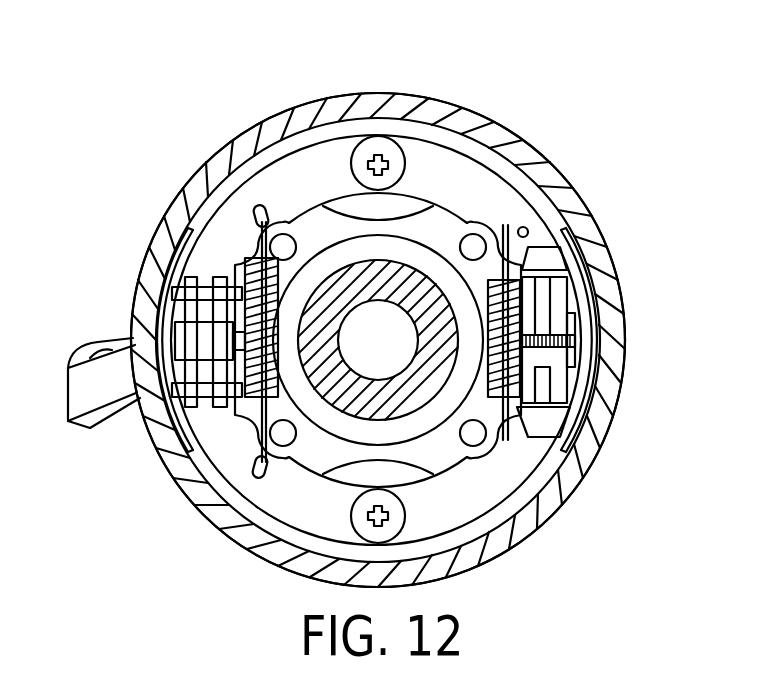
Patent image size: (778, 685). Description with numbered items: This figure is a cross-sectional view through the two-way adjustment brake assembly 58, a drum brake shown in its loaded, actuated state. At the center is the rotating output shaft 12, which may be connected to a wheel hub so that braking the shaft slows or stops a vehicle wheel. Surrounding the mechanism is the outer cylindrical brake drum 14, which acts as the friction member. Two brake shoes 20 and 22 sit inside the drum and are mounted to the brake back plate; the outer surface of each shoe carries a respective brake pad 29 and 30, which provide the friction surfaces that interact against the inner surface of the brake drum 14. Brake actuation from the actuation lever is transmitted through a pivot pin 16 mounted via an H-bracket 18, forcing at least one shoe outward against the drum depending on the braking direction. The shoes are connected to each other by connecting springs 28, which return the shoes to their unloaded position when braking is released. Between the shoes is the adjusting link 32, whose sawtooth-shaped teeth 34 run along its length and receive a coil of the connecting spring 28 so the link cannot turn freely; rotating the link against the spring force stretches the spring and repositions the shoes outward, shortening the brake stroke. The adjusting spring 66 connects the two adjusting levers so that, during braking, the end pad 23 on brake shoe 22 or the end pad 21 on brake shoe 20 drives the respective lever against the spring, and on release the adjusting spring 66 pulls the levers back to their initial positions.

The two-way adjustment brake assembly 58 is at (110, 128).
The brake drum 14 is at (380, 100).
The brake pad 30 is at (478, 545).
The brake pad 29 is at (283, 143).
The brake shoe 20 is at (314, 165).
The brake shoe 22 is at (308, 512).
The output shaft 12 is at (388, 325).
The adjusting spring 66 is at (243, 273).
The end pad 21 is at (205, 290).
The pivot pin 16 is at (172, 337).
The end pad 23 is at (165, 370).
The H-bracket 18 is at (162, 444).
The connecting spring 28 is at (525, 228).
The adjusting link 32 is at (567, 323).
The teeth 34 is at (557, 362).